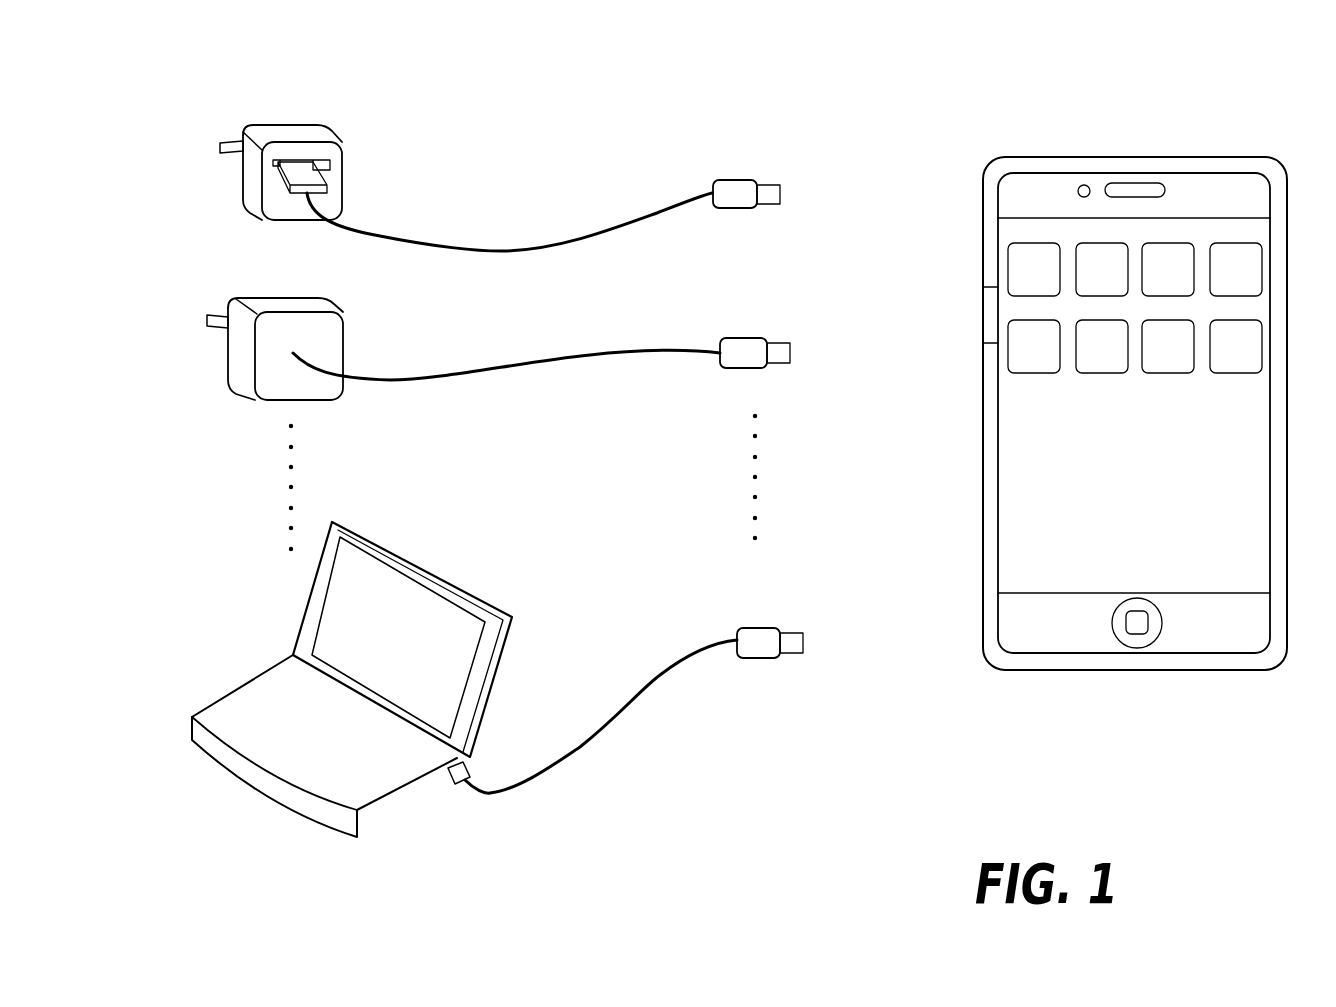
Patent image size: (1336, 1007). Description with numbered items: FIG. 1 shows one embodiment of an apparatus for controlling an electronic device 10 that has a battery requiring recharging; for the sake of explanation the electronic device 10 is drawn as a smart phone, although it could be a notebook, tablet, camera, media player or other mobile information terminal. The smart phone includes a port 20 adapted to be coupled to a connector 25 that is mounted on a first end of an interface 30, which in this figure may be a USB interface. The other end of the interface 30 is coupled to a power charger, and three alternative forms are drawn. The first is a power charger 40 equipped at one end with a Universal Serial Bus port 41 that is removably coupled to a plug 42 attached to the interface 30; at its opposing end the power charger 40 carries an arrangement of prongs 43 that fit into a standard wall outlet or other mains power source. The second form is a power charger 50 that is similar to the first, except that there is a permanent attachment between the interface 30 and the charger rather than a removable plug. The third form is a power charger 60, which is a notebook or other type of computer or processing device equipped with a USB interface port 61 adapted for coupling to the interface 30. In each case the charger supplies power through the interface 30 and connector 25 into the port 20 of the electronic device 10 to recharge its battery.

The electronic device 10 is at (985, 555).
The port 20 is at (983, 315).
The connector 25 is at (728, 136).
The interface 30 is at (490, 247).
The power charger 40 is at (317, 130).
The Universal Serial Bus port 41 is at (330, 165).
The plug 42 is at (292, 153).
The prongs 43 is at (222, 140).
The power charger 50 is at (325, 305).
The power charger 60 is at (490, 600).
The USB interface port 61 is at (470, 753).